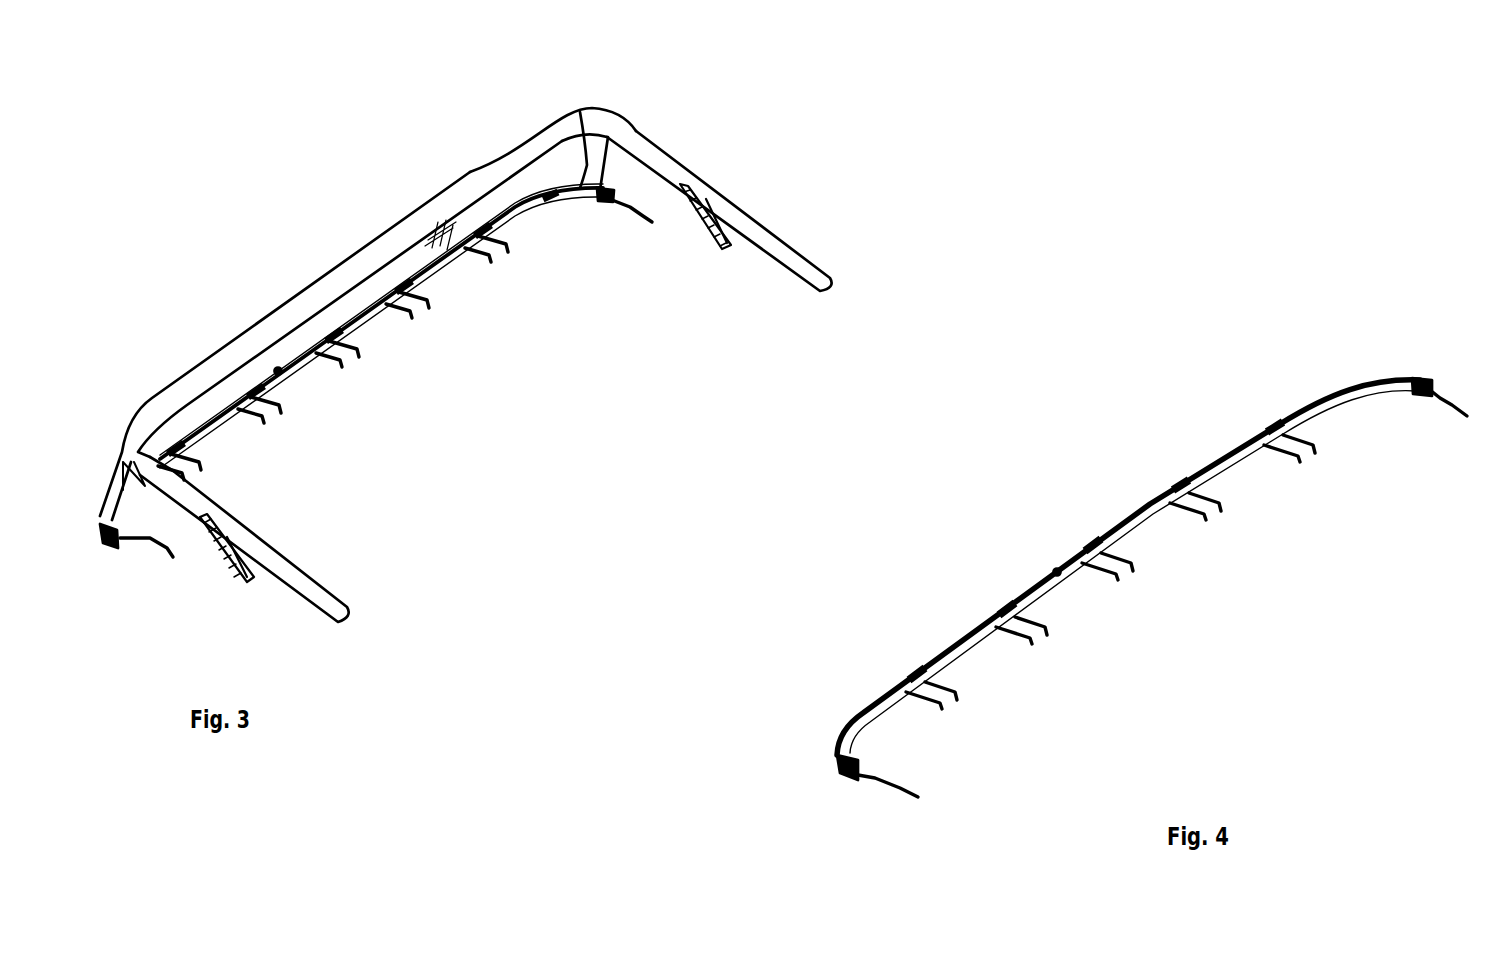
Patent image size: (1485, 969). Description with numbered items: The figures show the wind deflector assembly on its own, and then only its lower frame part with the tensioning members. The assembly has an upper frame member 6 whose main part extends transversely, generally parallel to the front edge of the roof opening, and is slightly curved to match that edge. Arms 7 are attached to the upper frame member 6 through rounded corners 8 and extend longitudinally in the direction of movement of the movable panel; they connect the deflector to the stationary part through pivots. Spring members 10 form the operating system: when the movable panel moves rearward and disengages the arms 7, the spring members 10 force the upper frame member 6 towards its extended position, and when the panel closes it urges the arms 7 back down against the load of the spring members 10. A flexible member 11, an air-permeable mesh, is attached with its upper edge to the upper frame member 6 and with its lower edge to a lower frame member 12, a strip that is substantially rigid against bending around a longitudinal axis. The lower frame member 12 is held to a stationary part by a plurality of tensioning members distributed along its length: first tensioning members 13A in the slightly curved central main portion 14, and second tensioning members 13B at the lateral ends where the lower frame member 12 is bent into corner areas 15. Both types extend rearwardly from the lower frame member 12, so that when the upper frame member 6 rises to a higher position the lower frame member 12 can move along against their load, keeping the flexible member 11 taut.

In FIG. 3, the upper frame member 6 is at (427, 213).
In FIG. 3, the arms 7 is at (700, 183).
In FIG. 3, the rounded corners 8 is at (600, 124).
In FIG. 3, the spring members 10 is at (730, 230).
In FIG. 3, the flexible member 11 is at (547, 177).
In FIG. 3, the lower frame member 12 is at (277, 367).
In FIG. 4, the lower frame member 12 is at (1057, 565).
In FIG. 3, the first tensioning members 13A is at (330, 355).
In FIG. 4, the first tensioning members 13A is at (1230, 500).
In FIG. 3, the second tensioning members 13B is at (148, 536).
In FIG. 4, the second tensioning members 13B is at (1427, 380).
In FIG. 3, the central main portion 14 is at (377, 305).
In FIG. 4, the central main portion 14 is at (980, 624).
In FIG. 3, the corner areas 15 is at (580, 112).
In FIG. 4, the corner areas 15 is at (1383, 373).